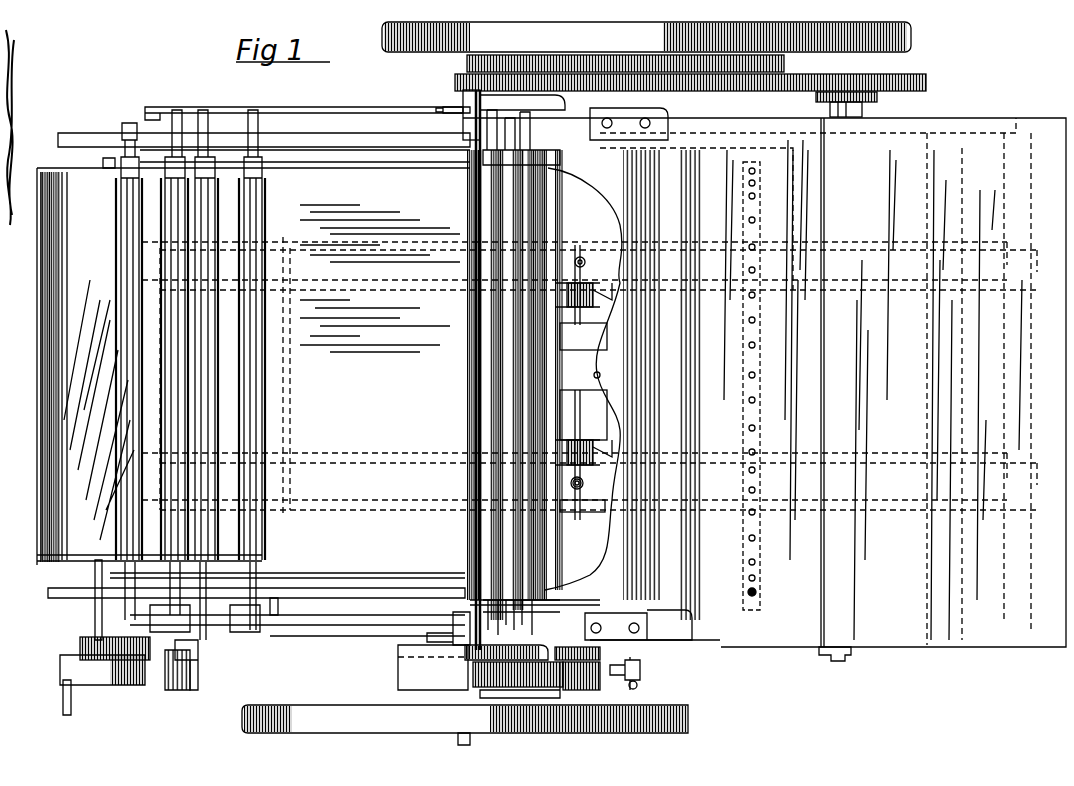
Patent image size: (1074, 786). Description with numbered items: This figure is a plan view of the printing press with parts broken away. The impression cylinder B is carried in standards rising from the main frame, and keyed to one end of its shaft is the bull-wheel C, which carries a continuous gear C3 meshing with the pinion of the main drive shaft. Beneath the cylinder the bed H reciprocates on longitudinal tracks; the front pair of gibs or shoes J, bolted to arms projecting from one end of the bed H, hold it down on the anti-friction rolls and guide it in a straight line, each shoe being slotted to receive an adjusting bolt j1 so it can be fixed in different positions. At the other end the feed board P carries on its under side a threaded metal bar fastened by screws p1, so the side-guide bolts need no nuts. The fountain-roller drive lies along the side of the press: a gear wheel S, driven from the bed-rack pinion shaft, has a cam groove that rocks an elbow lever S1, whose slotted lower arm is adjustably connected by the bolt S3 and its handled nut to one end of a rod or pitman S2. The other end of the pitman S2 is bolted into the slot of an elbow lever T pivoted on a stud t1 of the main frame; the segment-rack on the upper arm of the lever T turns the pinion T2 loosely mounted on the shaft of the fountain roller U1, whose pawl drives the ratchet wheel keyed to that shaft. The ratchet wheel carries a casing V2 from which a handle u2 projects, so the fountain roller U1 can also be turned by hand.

The bull-wheel C is at (646, 39).
The continuous gear C3 is at (720, 96).
The impression cylinder B is at (560, 603).
The feed board P is at (775, 568).
The screws p1 is at (756, 592).
The front gibs or shoes J is at (583, 391).
The adjusting bolt j1 is at (583, 486).
The bed H is at (253, 336).
The ink fountain-roller U1 is at (88, 570).
The pinion T2 is at (78, 645).
The casing V2 is at (143, 685).
The handle u2 is at (72, 702).
The elbow lever T is at (185, 675).
The stud t1 is at (198, 672).
The rod or pitman S2 is at (465, 707).
The gear wheel S is at (513, 690).
The adjusting bolt S3 is at (560, 700).
The elbow lever S1 is at (568, 702).